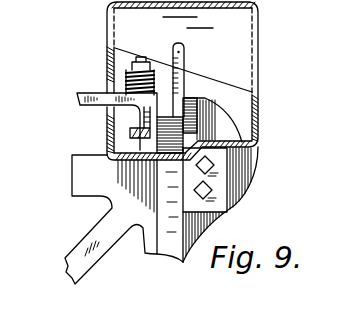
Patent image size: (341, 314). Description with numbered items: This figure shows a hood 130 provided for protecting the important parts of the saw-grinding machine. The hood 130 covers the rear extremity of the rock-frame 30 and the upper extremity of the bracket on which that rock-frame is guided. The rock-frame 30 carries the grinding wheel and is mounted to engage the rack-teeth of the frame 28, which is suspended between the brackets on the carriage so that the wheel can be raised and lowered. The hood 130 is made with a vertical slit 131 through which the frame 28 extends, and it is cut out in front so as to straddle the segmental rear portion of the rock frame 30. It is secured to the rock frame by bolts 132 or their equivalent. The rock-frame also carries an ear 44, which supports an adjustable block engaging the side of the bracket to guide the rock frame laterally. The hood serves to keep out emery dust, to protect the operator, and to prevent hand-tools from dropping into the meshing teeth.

The frame 28 is at (95, 107).
The rock-frame 30 is at (85, 189).
The ear 44 is at (236, 179).
The hood 130 is at (242, 38).
The vertical slit 131 is at (108, 88).
The bolt 132 is at (221, 203).